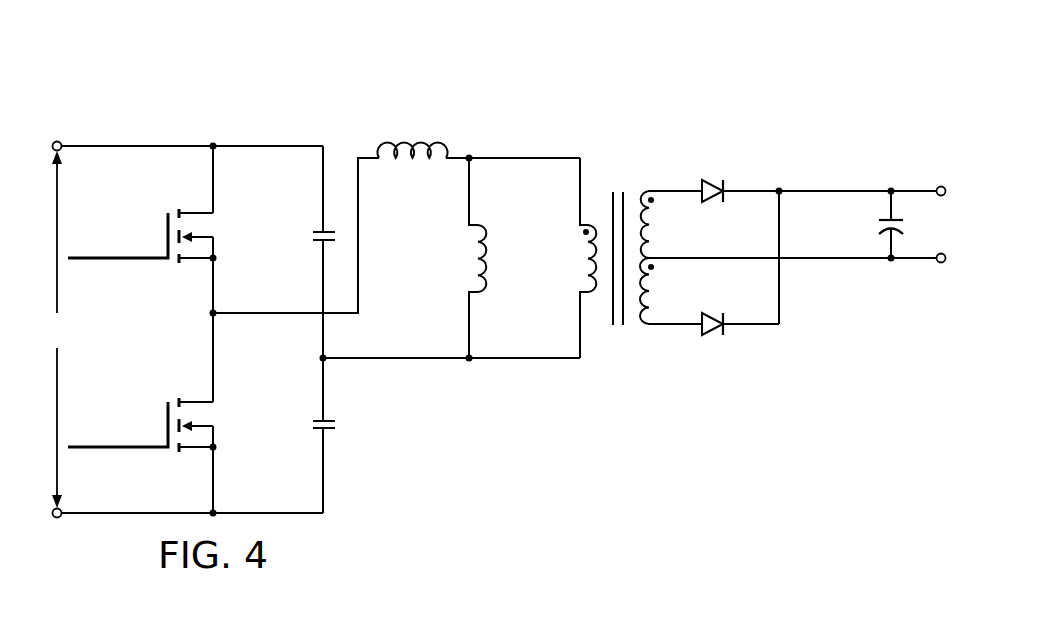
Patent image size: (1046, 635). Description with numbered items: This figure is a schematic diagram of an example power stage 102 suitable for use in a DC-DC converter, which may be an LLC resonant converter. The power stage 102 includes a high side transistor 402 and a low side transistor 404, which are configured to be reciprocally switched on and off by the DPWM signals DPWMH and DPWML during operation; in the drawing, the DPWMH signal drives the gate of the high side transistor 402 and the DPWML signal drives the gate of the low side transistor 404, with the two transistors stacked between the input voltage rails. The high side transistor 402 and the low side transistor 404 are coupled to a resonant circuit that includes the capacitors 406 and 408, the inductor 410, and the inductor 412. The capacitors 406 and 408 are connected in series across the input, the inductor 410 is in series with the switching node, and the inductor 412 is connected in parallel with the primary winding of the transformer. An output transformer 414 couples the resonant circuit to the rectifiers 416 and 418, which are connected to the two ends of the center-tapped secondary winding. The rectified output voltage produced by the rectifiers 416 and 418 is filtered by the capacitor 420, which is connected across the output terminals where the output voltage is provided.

The power stage 102 is at (287, 76).
The high side transistor 402 is at (163, 220).
The low side transistor 404 is at (163, 405).
The capacitor 406 is at (313, 237).
The capacitor 408 is at (313, 425).
The inductor 410 is at (405, 140).
The inductor 412 is at (487, 250).
The output transformer 414 is at (622, 188).
The rectifier 416 is at (715, 183).
The rectifier 418 is at (715, 332).
The capacitor 420 is at (877, 223).